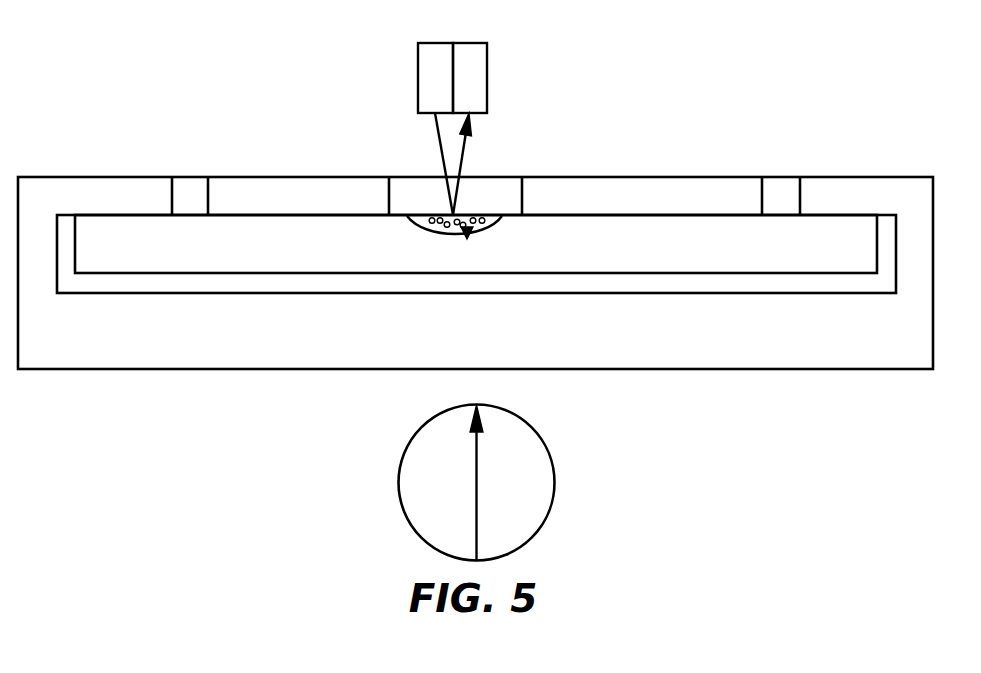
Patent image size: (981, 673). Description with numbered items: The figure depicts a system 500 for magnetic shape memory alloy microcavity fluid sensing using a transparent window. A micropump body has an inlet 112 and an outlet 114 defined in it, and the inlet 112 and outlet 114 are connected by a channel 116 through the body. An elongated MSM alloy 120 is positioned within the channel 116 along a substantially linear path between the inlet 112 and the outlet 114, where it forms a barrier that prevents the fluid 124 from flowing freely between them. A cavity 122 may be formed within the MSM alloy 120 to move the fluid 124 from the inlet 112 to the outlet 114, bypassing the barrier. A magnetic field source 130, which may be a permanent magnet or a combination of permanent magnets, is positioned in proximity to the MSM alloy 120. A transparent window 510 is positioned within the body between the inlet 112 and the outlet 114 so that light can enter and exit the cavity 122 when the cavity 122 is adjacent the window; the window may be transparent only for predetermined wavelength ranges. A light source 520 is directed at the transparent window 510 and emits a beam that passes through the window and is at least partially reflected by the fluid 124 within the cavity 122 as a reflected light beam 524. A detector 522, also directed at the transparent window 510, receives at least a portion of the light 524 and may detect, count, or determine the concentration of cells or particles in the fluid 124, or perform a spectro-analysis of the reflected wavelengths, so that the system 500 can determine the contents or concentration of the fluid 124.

The system for MSM alloy microcavity fluid sensing 500 is at (136, 46).
The inlet 112 is at (190, 176).
The outlet 114 is at (775, 176).
The channel 116 is at (130, 294).
The MSM alloy 120 is at (263, 274).
The cavity 122 is at (433, 229).
The fluid 124 is at (471, 236).
The magnetic field source 130 is at (436, 414).
The transparent window 510 is at (398, 176).
The light source 520 is at (435, 42).
The detector 522 is at (470, 42).
The reflected light beam 524 is at (467, 146).